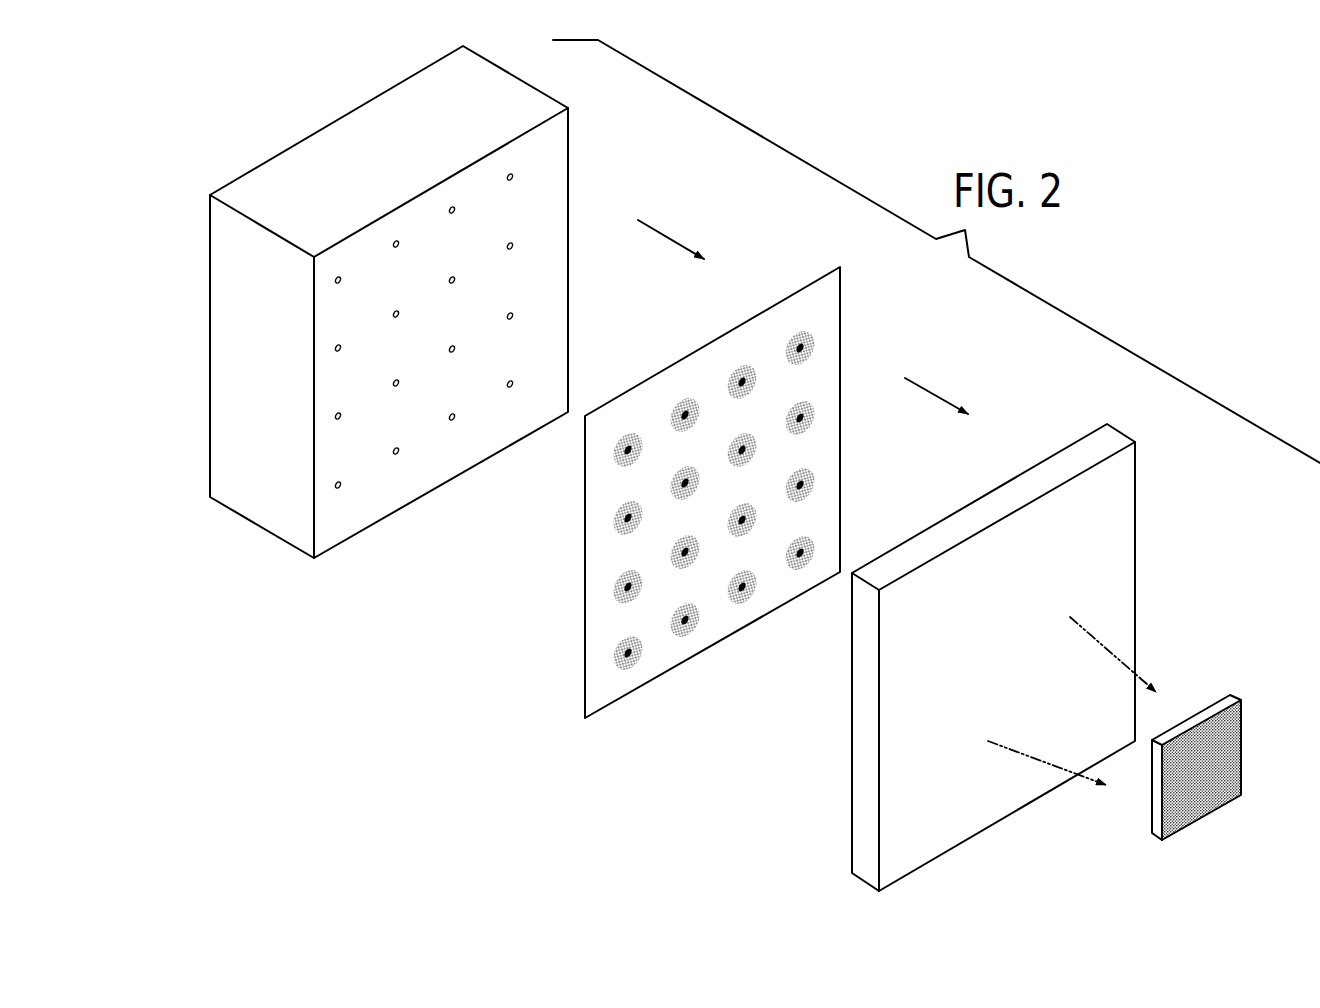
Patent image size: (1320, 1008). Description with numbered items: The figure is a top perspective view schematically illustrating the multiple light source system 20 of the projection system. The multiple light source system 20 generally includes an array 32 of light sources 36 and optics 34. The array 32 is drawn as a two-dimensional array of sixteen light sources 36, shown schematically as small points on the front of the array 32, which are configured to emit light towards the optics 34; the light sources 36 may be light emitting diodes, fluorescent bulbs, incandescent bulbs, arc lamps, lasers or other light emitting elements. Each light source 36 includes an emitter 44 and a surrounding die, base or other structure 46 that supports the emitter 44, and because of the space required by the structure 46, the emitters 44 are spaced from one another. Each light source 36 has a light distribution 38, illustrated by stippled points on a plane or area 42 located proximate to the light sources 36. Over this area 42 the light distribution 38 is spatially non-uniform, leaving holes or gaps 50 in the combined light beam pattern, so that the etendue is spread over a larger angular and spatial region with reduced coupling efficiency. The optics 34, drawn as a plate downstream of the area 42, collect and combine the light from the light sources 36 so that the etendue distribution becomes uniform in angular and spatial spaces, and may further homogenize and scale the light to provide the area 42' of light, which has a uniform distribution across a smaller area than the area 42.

The multiple light source system 20 is at (378, 322).
The array 32 is at (257, 534).
The optics 34 is at (848, 855).
The light sources 36 is at (432, 290).
The light distribution 38 is at (683, 407).
The area 42 is at (677, 492).
The area of light 42' is at (1196, 792).
The emitter 44 is at (509, 174).
The structure 46 is at (472, 185).
The holes or gaps 50 is at (675, 473).